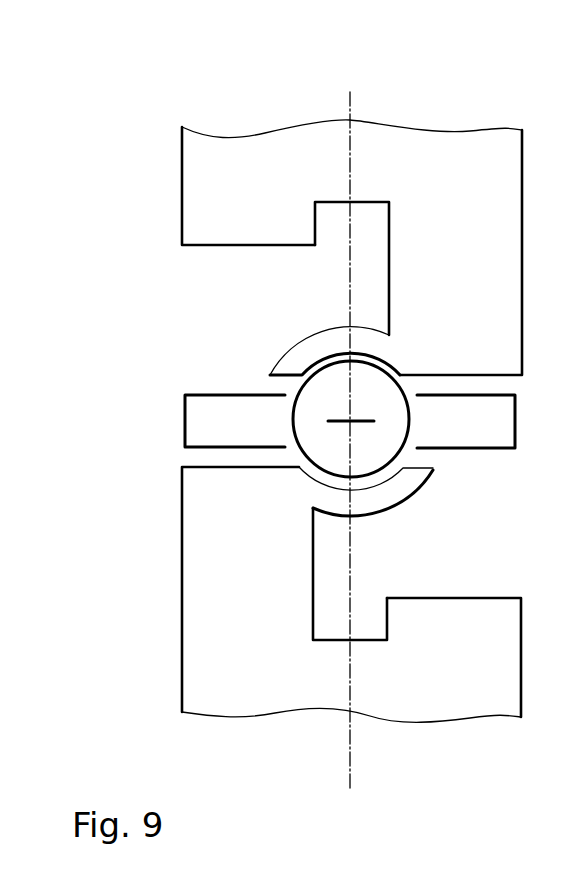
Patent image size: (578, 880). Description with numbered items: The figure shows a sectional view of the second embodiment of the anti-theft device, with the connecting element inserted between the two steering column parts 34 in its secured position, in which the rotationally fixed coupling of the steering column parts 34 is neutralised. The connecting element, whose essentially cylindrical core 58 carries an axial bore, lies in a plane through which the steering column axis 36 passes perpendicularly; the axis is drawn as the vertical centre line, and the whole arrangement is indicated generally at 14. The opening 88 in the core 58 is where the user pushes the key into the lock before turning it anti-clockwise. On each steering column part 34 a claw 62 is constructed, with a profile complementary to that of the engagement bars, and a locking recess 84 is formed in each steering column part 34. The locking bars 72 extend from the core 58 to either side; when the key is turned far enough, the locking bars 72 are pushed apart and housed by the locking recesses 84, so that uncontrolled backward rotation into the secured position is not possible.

The electromagnetic valve / actuator assembly 14 is at (325, 112).
The steering column part 34 is at (208, 192).
The steering column axis 36 is at (345, 752).
The core 58 is at (303, 390).
The claw 62 is at (297, 356).
The locking bar 72 is at (170, 429).
The locking recess 84 is at (343, 203).
The opening 88 is at (360, 423).